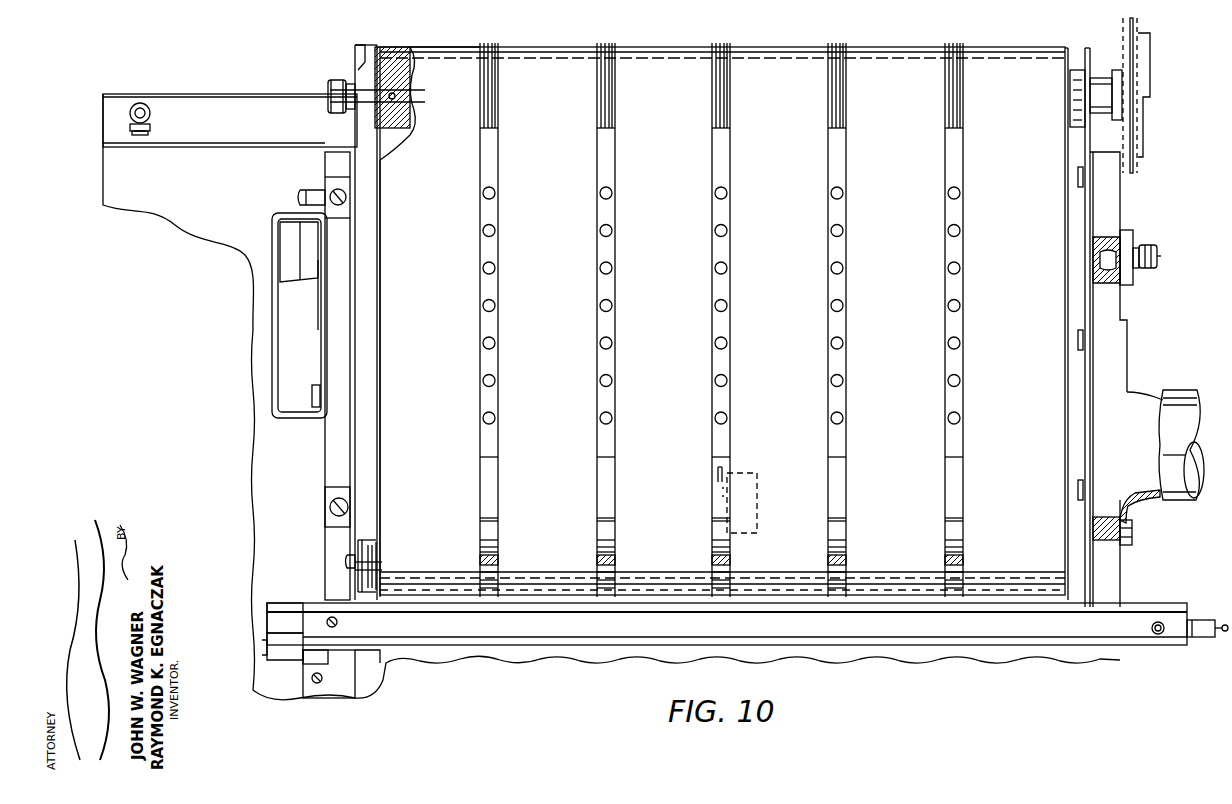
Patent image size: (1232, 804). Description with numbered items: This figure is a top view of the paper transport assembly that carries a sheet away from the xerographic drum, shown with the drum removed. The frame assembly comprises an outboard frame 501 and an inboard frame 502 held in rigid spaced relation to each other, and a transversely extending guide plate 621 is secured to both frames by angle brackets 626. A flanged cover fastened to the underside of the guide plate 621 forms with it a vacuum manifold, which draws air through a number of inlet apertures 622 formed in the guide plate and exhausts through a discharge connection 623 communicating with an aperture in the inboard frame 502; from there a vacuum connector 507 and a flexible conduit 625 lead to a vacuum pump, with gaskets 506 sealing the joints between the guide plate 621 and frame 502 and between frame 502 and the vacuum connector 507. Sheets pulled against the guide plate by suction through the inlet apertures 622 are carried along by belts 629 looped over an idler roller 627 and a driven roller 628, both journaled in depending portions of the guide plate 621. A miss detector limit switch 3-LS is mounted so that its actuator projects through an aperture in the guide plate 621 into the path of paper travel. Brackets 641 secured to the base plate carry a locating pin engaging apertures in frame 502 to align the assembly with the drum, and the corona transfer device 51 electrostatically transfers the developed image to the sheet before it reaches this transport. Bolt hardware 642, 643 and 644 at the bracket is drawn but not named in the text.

The corona transfer device 51 is at (1148, 606).
The outboard frame 501 is at (325, 464).
The inboard frame 502 is at (1118, 575).
The gaskets 506 is at (1090, 419).
The vacuum connector 507 is at (1130, 508).
The guide plate 621 is at (731, 256).
The inlet apertures 622 is at (731, 326).
The discharge connection 623 is at (1096, 518).
The flexible conduit 625 is at (1172, 388).
The angle brackets 626 is at (328, 500).
The idler roller 627 is at (608, 564).
The driven roller 628 is at (400, 47).
The belts 629 is at (760, 47).
The brackets 641 is at (1133, 284).
The bolt bushing 642 is at (1100, 258).
The nut 643 is at (1160, 256).
The lock washer 644 is at (1140, 266).
The miss detector limit switch 3-LS is at (742, 503).